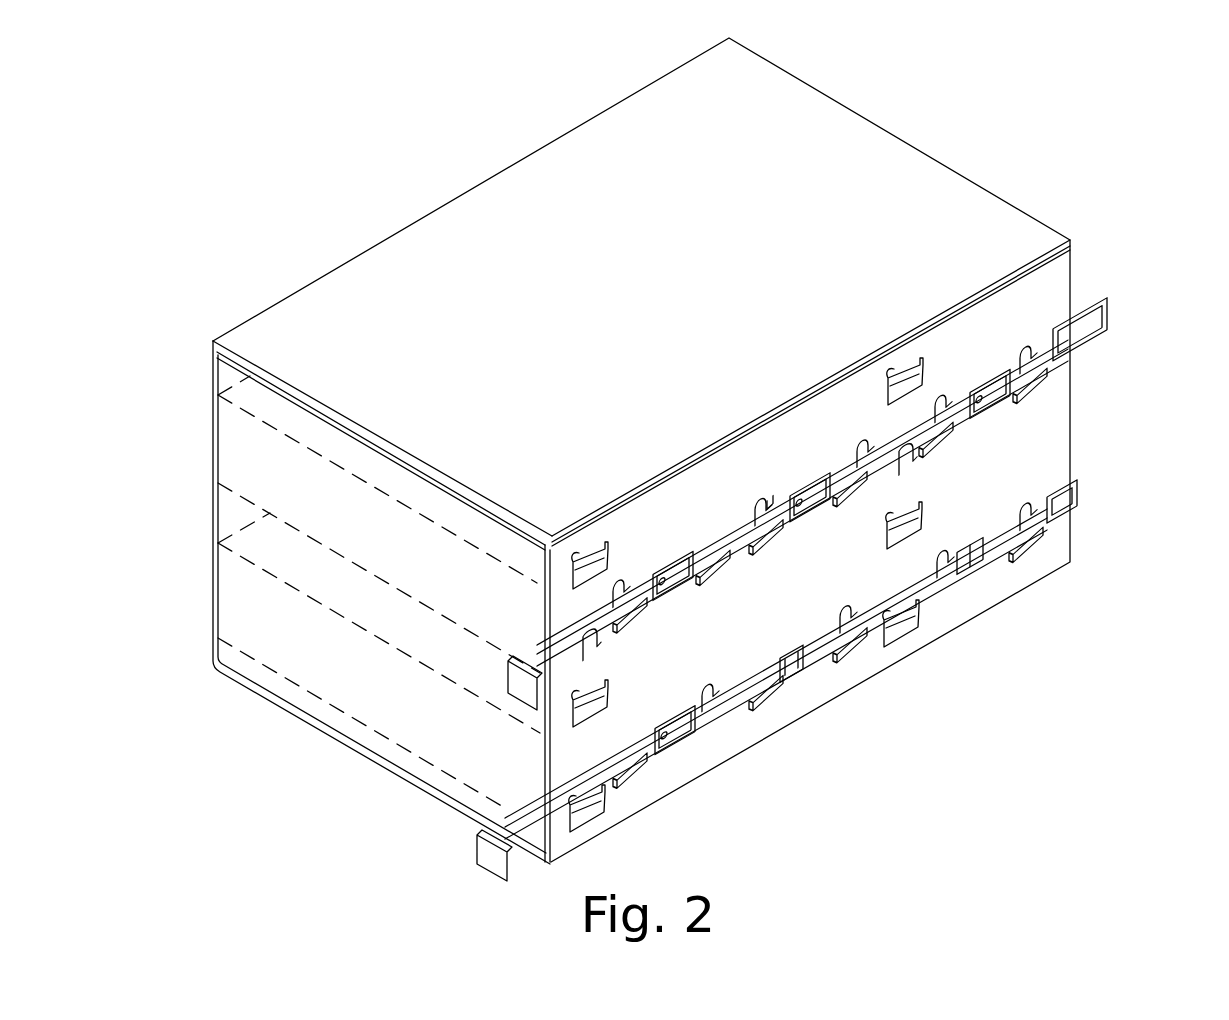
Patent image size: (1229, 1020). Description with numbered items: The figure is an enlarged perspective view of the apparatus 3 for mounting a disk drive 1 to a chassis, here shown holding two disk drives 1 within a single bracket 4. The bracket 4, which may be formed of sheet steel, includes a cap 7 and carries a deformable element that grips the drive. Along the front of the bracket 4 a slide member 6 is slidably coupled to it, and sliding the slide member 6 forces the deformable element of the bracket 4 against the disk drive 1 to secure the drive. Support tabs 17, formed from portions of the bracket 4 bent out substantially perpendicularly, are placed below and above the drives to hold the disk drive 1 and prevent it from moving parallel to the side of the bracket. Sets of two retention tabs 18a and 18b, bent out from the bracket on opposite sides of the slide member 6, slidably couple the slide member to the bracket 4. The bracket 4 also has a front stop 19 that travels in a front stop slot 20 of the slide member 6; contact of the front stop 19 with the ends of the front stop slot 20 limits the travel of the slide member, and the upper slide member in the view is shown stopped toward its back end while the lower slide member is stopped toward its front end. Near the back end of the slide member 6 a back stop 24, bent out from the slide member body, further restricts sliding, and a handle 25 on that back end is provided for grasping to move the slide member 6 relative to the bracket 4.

The disk drive 1 is at (377, 525).
The apparatus 3 is at (866, 752).
The bracket 4 is at (798, 446).
The slide member 6 is at (864, 448).
The cap 7 is at (597, 285).
The support tab 17 is at (903, 372).
The retention tab 18a is at (727, 587).
The retention tab 18b is at (772, 513).
The front stop 19 is at (1073, 355).
The front stop slot 20 is at (1083, 343).
The back stop 24 is at (528, 638).
The handle 25 is at (525, 690).